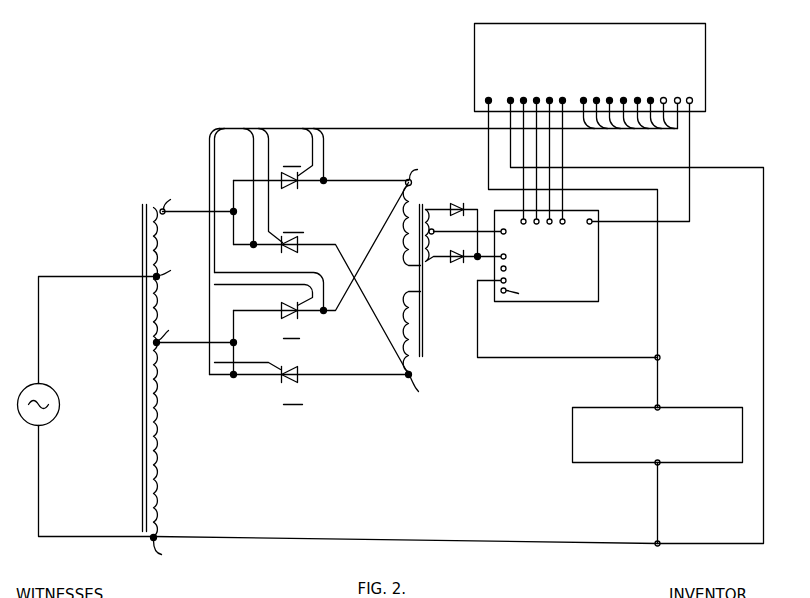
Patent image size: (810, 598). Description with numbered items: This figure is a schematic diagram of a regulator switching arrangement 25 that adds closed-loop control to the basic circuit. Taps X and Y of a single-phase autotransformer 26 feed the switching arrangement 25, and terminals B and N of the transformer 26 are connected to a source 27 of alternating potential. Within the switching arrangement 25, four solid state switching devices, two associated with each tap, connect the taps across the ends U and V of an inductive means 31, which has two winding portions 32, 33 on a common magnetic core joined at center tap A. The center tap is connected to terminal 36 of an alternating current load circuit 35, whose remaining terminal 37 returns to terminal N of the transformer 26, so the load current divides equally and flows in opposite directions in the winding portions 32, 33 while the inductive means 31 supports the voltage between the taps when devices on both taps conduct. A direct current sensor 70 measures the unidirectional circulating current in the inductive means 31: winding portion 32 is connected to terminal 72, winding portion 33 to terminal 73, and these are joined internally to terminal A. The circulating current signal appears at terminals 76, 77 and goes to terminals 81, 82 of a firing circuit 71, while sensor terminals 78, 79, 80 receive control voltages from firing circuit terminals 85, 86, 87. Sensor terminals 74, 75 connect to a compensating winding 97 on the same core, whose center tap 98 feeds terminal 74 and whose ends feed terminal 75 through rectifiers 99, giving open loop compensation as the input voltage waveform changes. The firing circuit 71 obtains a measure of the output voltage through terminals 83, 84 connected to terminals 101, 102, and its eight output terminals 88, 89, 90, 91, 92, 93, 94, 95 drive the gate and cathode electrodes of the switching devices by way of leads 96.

The regulator switching arrangement 25 is at (356, 234).
The autotransformer 26 is at (135, 352).
The source of alternating potential 27 is at (55, 393).
The inductive means 31 is at (406, 287).
The winding portion 32 is at (408, 250).
The winding portion 33 is at (408, 312).
The load circuit 35 is at (659, 462).
The load circuit terminal 36 is at (657, 408).
The load circuit terminal 37 is at (657, 463).
The direct current sensor 70 is at (573, 227).
The firing circuit 71 is at (611, 216).
The sensor terminal 72 is at (506, 281).
The sensor terminal 73 is at (503, 292).
The sensor terminal 74 is at (503, 229).
The sensor terminal 75 is at (506, 269).
The sensor terminal 76 is at (523, 225).
The sensor terminal 77 is at (536, 225).
The sensor terminal 78 is at (549, 225).
The sensor terminal 79 is at (562, 225).
The sensor terminal 80 is at (589, 219).
The firing circuit terminal 81 is at (523, 90).
The firing circuit terminal 82 is at (536, 98).
The firing circuit terminal 83 is at (568, 242).
The firing circuit terminal 84 is at (510, 98).
The firing circuit terminal 85 is at (550, 90).
The firing circuit terminal 86 is at (562, 98).
The firing circuit terminal 87 is at (689, 104).
The firing circuit output terminal 88 is at (584, 103).
The firing circuit output terminal 89 is at (596, 98).
The firing circuit output terminal 90 is at (610, 103).
The firing circuit output terminal 91 is at (623, 98).
The firing circuit output terminal 92 is at (638, 103).
The firing circuit output terminal 93 is at (650, 98).
The firing circuit output terminal 94 is at (665, 103).
The firing circuit output terminal 95 is at (677, 98).
The leads 96 is at (423, 129).
The winding 97 is at (455, 203).
The center tap 98 is at (430, 262).
The rectifiers 99 is at (455, 264).
The output voltage terminal 101 is at (657, 358).
The output voltage terminal 102 is at (657, 544).